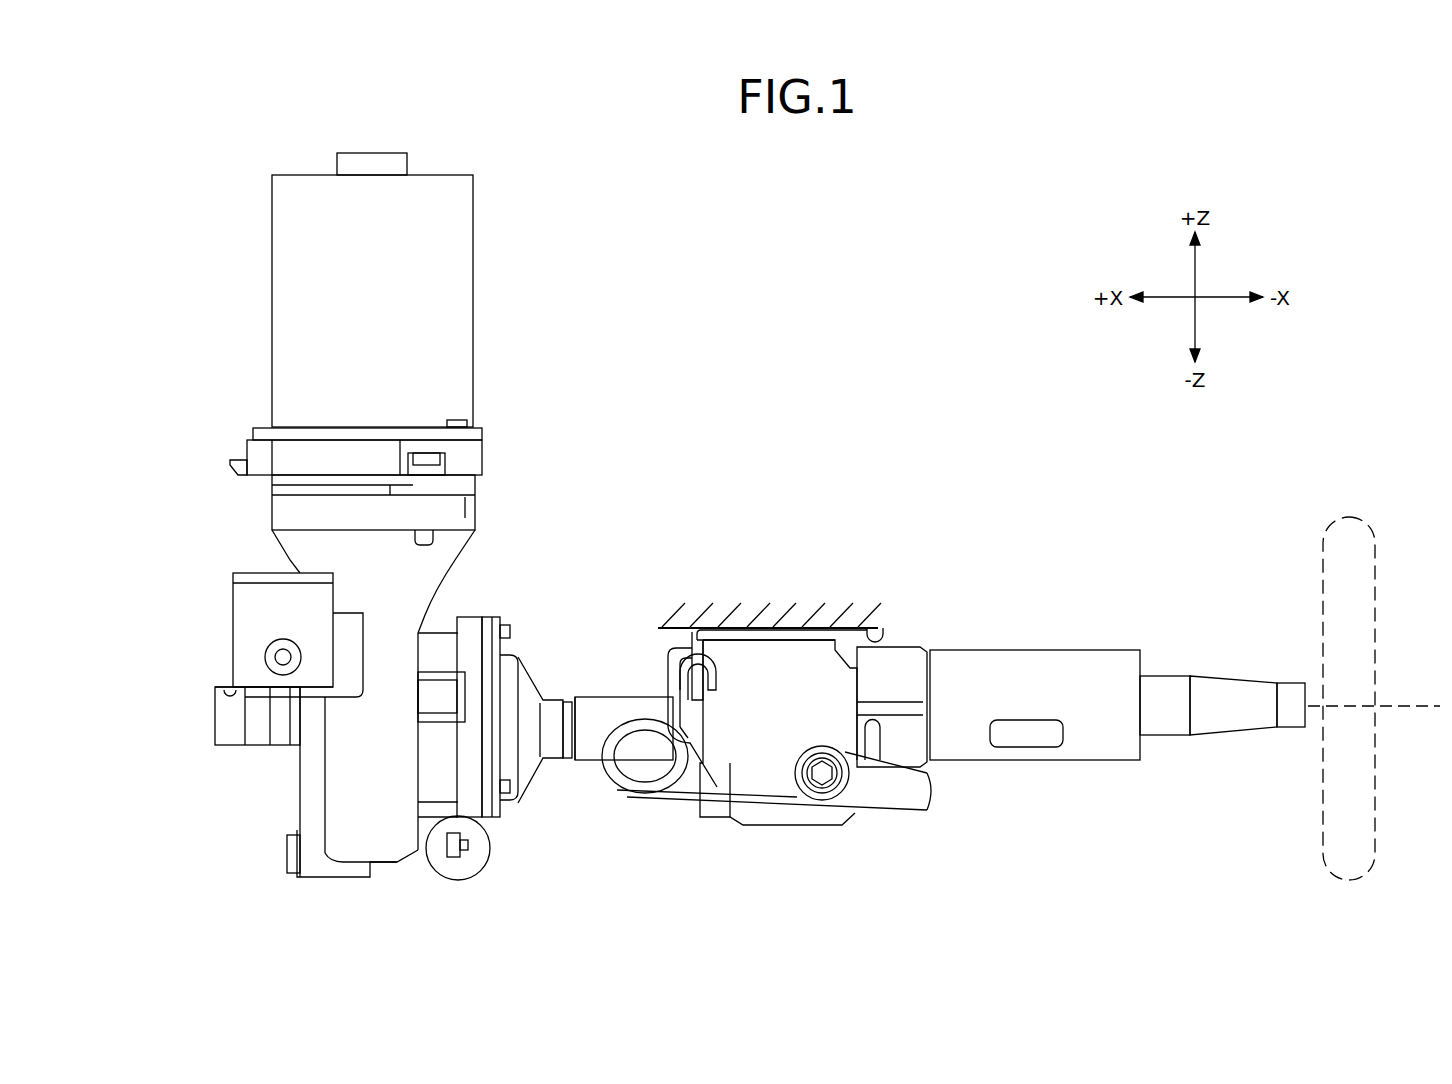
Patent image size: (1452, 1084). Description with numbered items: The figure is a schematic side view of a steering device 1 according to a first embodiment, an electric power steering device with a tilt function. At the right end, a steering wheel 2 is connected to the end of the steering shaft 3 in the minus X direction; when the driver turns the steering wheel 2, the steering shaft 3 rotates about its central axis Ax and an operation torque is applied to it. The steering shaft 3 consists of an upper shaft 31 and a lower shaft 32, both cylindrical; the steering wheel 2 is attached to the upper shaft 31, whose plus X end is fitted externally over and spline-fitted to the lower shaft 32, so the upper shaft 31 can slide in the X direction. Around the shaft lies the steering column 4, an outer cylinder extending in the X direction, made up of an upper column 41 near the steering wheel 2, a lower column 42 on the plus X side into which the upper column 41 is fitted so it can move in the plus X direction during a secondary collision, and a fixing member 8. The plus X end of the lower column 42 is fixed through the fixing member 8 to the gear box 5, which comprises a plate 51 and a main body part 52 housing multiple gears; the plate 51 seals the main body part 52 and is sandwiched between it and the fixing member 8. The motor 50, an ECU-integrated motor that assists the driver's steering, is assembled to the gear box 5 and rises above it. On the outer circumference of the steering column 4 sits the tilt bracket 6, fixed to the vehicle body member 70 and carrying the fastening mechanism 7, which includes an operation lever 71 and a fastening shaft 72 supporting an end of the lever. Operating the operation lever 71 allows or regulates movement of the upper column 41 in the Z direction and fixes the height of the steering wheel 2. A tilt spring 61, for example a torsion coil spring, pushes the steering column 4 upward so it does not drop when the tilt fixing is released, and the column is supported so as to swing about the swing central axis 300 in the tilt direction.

The steering device 1 is at (838, 436).
The steering wheel 2 is at (1365, 522).
The steering shaft 3 is at (1183, 747).
The upper shaft 31 is at (1240, 693).
The lower shaft 32 is at (235, 727).
The steering column 4 is at (1040, 642).
The upper column 41 is at (1032, 702).
The lower column 42 is at (587, 743).
The gear box 5 is at (480, 602).
The motor 50 is at (438, 308).
The plate 51 is at (485, 813).
The main body part 52 is at (468, 772).
The tilt bracket 6 is at (760, 735).
The tilt spring 61 is at (635, 790).
The fastening mechanism 7 is at (829, 733).
The vehicle body member 70 is at (887, 633).
The operation lever 71 is at (890, 790).
The fastening shaft 72 is at (817, 787).
The fixing member 8 is at (527, 690).
The swing central axis 300 is at (272, 656).
The central axis Ax is at (1425, 697).